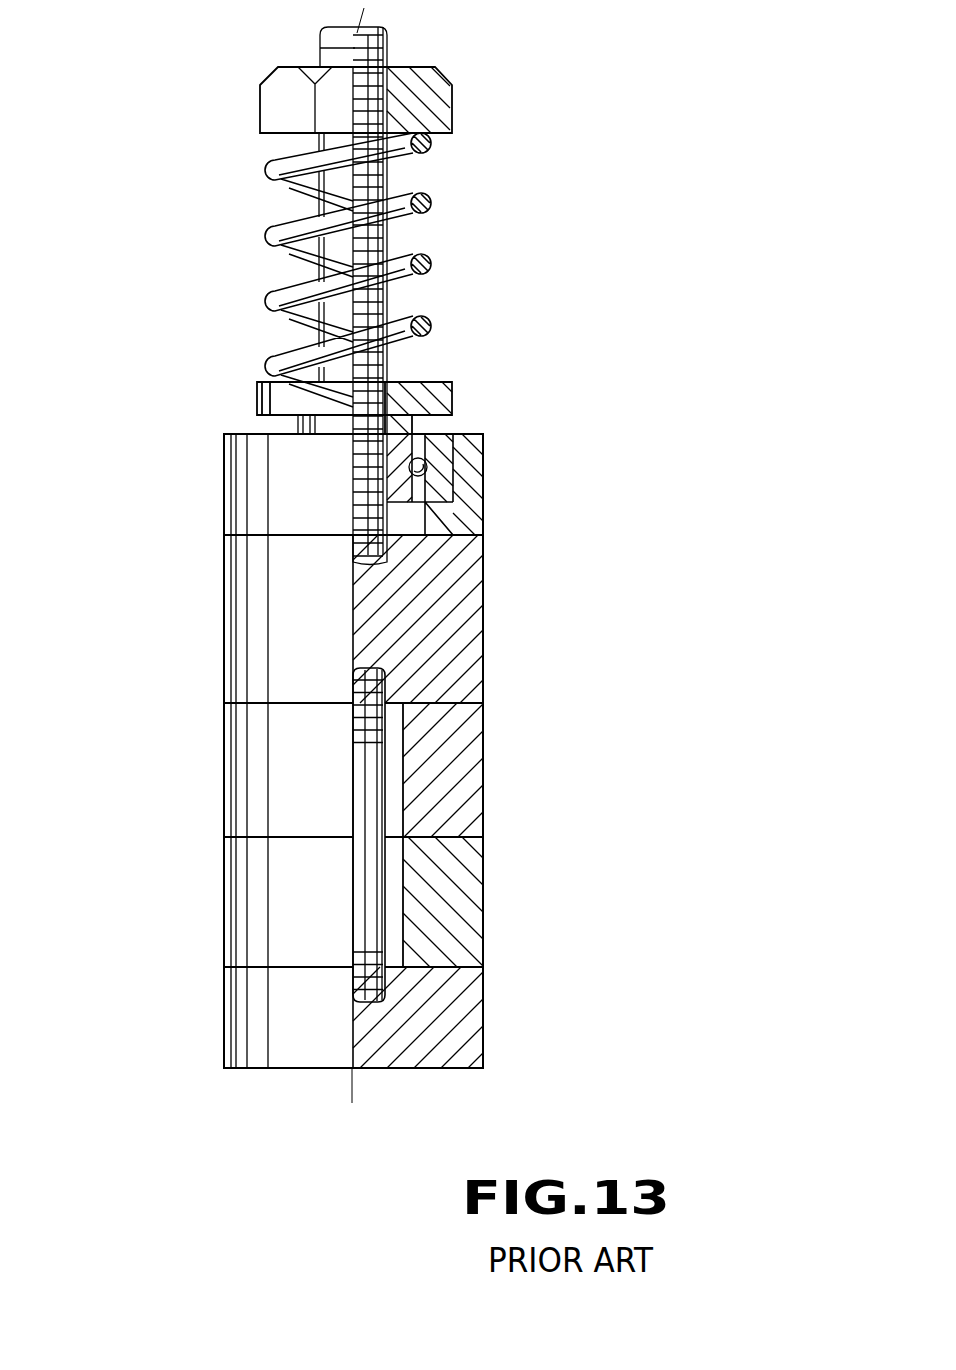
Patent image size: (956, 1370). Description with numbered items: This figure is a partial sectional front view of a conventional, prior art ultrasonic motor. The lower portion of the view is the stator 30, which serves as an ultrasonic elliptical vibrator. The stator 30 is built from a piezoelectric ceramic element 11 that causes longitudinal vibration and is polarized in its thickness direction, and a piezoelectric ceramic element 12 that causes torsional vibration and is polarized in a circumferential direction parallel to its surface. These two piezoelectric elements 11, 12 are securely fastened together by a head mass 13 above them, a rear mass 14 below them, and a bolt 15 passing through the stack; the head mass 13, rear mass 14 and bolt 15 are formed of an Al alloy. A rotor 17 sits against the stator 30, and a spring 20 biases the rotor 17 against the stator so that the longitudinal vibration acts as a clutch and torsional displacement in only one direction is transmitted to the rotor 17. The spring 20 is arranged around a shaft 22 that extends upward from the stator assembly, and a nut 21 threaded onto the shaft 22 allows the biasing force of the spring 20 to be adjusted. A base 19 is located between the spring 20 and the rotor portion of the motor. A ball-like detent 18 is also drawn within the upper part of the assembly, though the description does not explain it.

The piezoelectric ceramic element for longitudinal vibration 11 is at (458, 787).
The piezoelectric ceramic element for torsional vibration 12 is at (470, 942).
The head mass 13 is at (465, 655).
The rear mass 14 is at (470, 1025).
The bolt 15 is at (370, 888).
The rotor 17 is at (470, 512).
The ball detent 18 is at (443, 462).
The base 19 is at (455, 397).
The spring 20 is at (435, 266).
The nut 21 is at (452, 116).
The shaft 22 is at (390, 28).
The stator 30 is at (146, 1067).